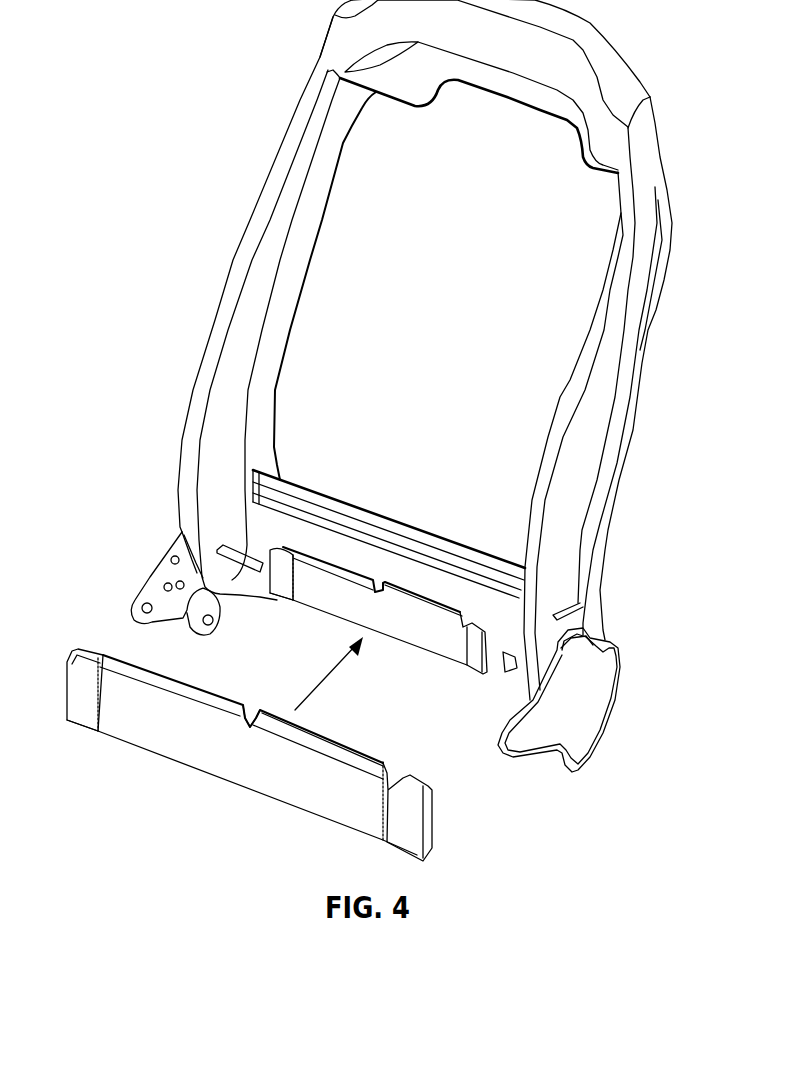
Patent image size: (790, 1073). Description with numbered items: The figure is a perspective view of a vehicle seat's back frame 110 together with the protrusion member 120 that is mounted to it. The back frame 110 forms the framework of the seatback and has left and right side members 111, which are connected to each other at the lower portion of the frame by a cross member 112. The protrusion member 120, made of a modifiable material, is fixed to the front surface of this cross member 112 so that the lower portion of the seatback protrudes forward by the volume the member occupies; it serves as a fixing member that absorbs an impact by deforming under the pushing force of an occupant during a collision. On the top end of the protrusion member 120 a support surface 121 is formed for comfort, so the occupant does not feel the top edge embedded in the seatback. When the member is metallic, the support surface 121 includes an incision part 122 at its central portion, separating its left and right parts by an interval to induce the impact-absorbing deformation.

The back frame 110 is at (282, 137).
The side members 111 is at (547, 540).
The cross member 112 is at (205, 582).
The protrusion member 120 is at (263, 777).
The support surface 121 is at (340, 750).
The incision part 122 is at (250, 713).